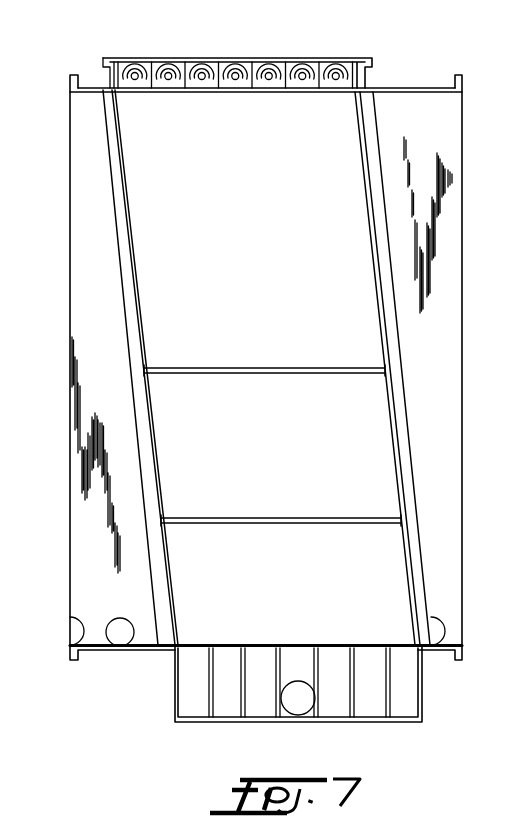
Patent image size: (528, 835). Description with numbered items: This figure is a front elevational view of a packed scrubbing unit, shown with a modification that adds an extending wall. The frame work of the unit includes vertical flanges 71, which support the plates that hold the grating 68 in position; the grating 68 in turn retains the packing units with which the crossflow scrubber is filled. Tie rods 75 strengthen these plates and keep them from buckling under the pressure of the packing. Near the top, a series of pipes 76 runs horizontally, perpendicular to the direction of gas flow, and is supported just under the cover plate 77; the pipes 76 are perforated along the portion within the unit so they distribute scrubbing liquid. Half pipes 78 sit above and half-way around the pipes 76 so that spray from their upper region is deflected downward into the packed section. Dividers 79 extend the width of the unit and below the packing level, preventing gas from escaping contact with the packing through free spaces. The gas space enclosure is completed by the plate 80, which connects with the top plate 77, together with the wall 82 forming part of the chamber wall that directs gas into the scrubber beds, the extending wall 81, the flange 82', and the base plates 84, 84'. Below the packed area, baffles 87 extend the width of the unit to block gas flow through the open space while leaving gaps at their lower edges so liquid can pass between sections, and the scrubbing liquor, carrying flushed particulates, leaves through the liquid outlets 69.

The grating 68 is at (172, 263).
The liquid outlets 69 is at (303, 713).
The vertical flanges 71 is at (110, 148).
The tie rods 75 is at (268, 368).
The pipes 76 is at (252, 80).
The cover plate 77 is at (194, 58).
The half pipes 78 is at (292, 62).
The dividers 79 is at (188, 84).
The plate 80 is at (413, 88).
The extending wall 81 is at (462, 108).
The wall 82 is at (93, 367).
The upper flange 82' is at (78, 58).
The base plate 84 is at (240, 626).
The base plate 84' is at (470, 625).
The baffles 87 is at (275, 698).